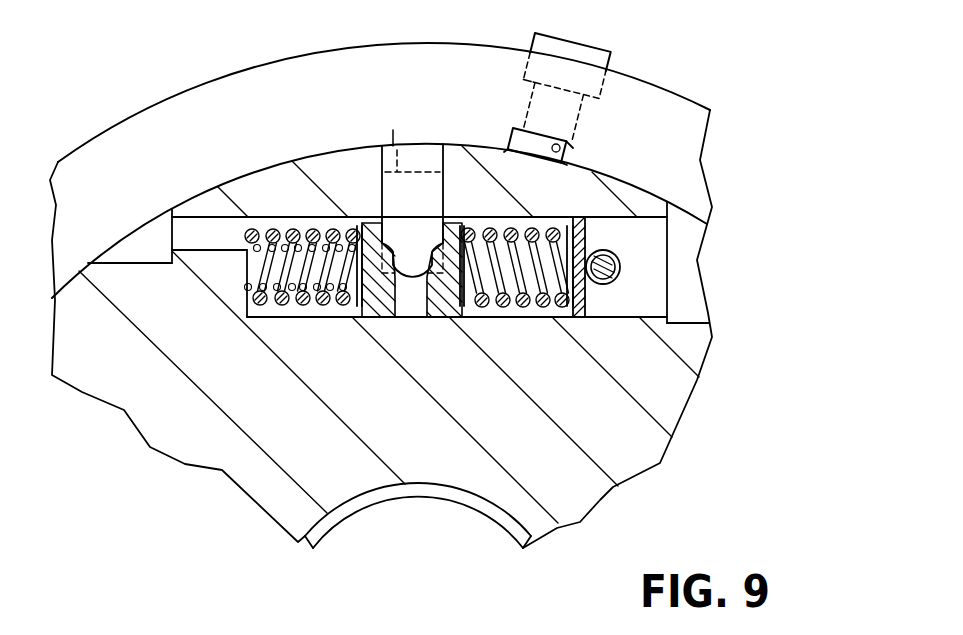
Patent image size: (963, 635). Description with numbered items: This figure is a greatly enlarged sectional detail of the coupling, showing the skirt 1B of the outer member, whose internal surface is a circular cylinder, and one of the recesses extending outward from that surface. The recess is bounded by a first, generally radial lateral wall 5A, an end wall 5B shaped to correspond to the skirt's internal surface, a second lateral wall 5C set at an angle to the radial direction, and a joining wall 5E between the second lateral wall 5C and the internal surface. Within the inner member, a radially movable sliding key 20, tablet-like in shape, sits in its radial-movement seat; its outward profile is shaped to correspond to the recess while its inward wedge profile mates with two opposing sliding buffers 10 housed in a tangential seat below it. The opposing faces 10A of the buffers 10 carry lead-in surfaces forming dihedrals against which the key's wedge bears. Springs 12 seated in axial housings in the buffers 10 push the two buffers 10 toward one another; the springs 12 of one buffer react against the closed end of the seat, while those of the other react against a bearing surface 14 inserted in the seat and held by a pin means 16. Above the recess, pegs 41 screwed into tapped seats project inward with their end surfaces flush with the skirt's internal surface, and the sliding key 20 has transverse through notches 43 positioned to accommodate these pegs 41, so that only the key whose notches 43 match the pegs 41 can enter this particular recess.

The skirt 1B is at (179, 120).
The transverse notch 43 is at (397, 150).
The sliding key 20 is at (387, 202).
The peg 41 is at (597, 50).
The first lateral wall 5A is at (514, 152).
The end wall 5B is at (515, 125).
The second lateral wall 5C is at (572, 148).
The joining wall 5E is at (568, 150).
The sliding buffer 10 is at (306, 318).
The opposing face 10A is at (427, 302).
The spring 12 is at (541, 318).
The bearing surface 14 is at (586, 304).
The pin means 16 is at (604, 262).